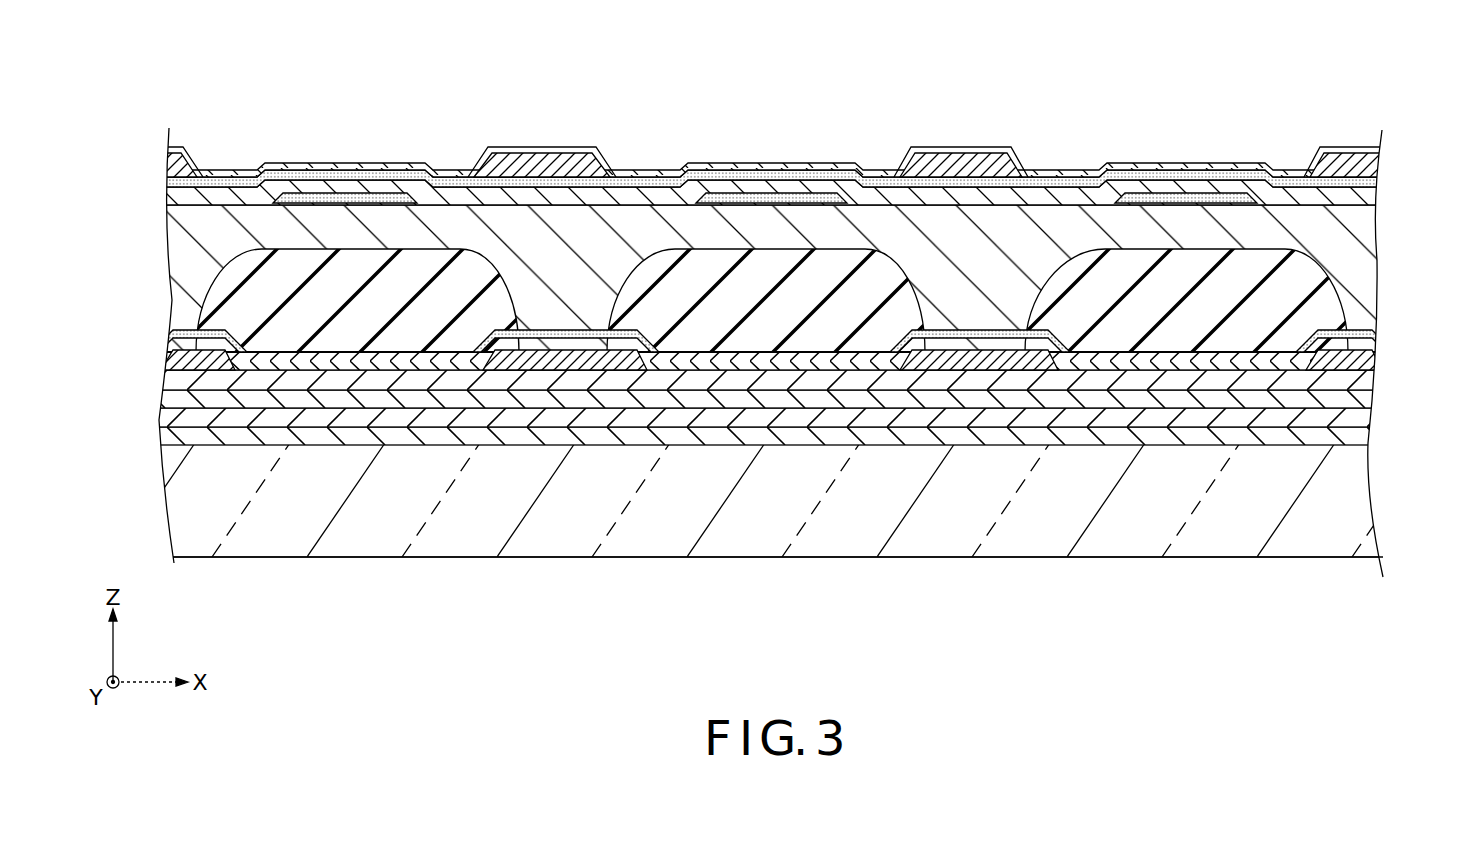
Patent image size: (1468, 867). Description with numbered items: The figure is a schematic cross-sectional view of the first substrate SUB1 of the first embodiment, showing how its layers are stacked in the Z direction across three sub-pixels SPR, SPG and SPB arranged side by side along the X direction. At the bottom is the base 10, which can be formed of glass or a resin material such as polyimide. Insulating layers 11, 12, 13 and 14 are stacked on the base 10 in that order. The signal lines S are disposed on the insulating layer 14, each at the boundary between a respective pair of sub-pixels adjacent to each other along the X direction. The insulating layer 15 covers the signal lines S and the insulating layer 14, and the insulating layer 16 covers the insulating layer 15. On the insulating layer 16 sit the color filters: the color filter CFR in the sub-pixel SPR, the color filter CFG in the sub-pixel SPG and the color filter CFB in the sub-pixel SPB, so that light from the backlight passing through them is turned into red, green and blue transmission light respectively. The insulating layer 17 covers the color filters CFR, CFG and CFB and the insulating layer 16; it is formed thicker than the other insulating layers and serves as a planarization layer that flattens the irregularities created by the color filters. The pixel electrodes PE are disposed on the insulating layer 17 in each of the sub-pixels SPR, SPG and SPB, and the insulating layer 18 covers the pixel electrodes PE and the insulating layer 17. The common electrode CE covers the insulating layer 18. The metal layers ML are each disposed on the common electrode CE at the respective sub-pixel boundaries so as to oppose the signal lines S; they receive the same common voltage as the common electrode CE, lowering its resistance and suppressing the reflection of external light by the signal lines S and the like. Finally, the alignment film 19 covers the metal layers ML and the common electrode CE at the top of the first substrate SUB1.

The base 10 is at (1372, 491).
The insulating layer 11 is at (1370, 436).
The insulating layer 12 is at (1367, 430).
The insulating layer 13 is at (1366, 415).
The insulating layer 14 is at (1364, 380).
The insulating layer 15 is at (1367, 356).
The insulating layer 16 is at (1372, 334).
The insulating layer 17 is at (1374, 259).
The insulating layer 18 is at (1363, 197).
The alignment film 19 is at (1277, 170).
The metal layer ML is at (186, 153).
The pixel electrode PE is at (394, 192).
The common electrode CE is at (640, 172).
The signal line S is at (166, 353).
The color filter CFR is at (376, 256).
The color filter CFG is at (805, 256).
The color filter CFB is at (1198, 256).
The sub-pixel SPR is at (343, 143).
The sub-pixel SPG is at (763, 143).
The sub-pixel SPB is at (1176, 143).
The first substrate SUB1 is at (1371, 127).